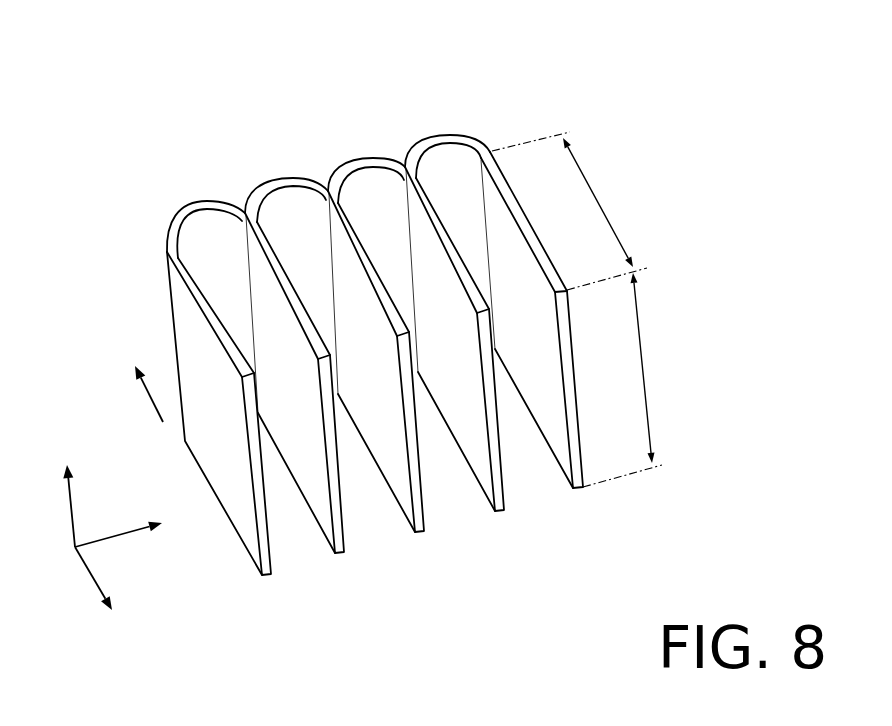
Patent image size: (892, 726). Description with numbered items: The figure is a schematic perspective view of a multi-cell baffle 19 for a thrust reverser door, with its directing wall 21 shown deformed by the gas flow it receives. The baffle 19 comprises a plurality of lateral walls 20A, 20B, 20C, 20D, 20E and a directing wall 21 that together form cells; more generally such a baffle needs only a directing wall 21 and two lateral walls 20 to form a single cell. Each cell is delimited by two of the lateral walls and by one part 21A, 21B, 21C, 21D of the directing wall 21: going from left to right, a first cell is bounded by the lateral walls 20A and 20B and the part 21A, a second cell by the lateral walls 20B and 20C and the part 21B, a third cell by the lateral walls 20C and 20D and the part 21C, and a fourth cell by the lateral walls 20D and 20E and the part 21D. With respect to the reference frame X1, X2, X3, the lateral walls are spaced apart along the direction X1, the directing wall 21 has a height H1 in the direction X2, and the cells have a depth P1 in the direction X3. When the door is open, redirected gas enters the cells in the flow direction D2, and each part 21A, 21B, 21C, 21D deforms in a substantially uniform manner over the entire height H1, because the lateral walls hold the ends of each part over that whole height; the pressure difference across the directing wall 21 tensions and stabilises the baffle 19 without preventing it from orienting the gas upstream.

The baffle 19 is at (150, 287).
The lateral walls 20 is at (607, 635).
The lateral wall 20A is at (266, 577).
The lateral wall 20B is at (345, 555).
The lateral wall 20C is at (425, 534).
The lateral wall 20D is at (502, 513).
The lateral wall 20E is at (580, 490).
The directing wall 21 is at (442, 67).
The part of the directing wall 21A is at (190, 200).
The part of the directing wall 21B is at (285, 183).
The part of the directing wall 21C is at (360, 163).
The part of the directing wall 21D is at (440, 143).
The flow direction D2 is at (150, 400).
The depth P1 is at (569, 211).
The height H1 is at (637, 380).
The direction X1 is at (137, 537).
The direction X2 is at (50, 497).
The direction X3 is at (114, 582).